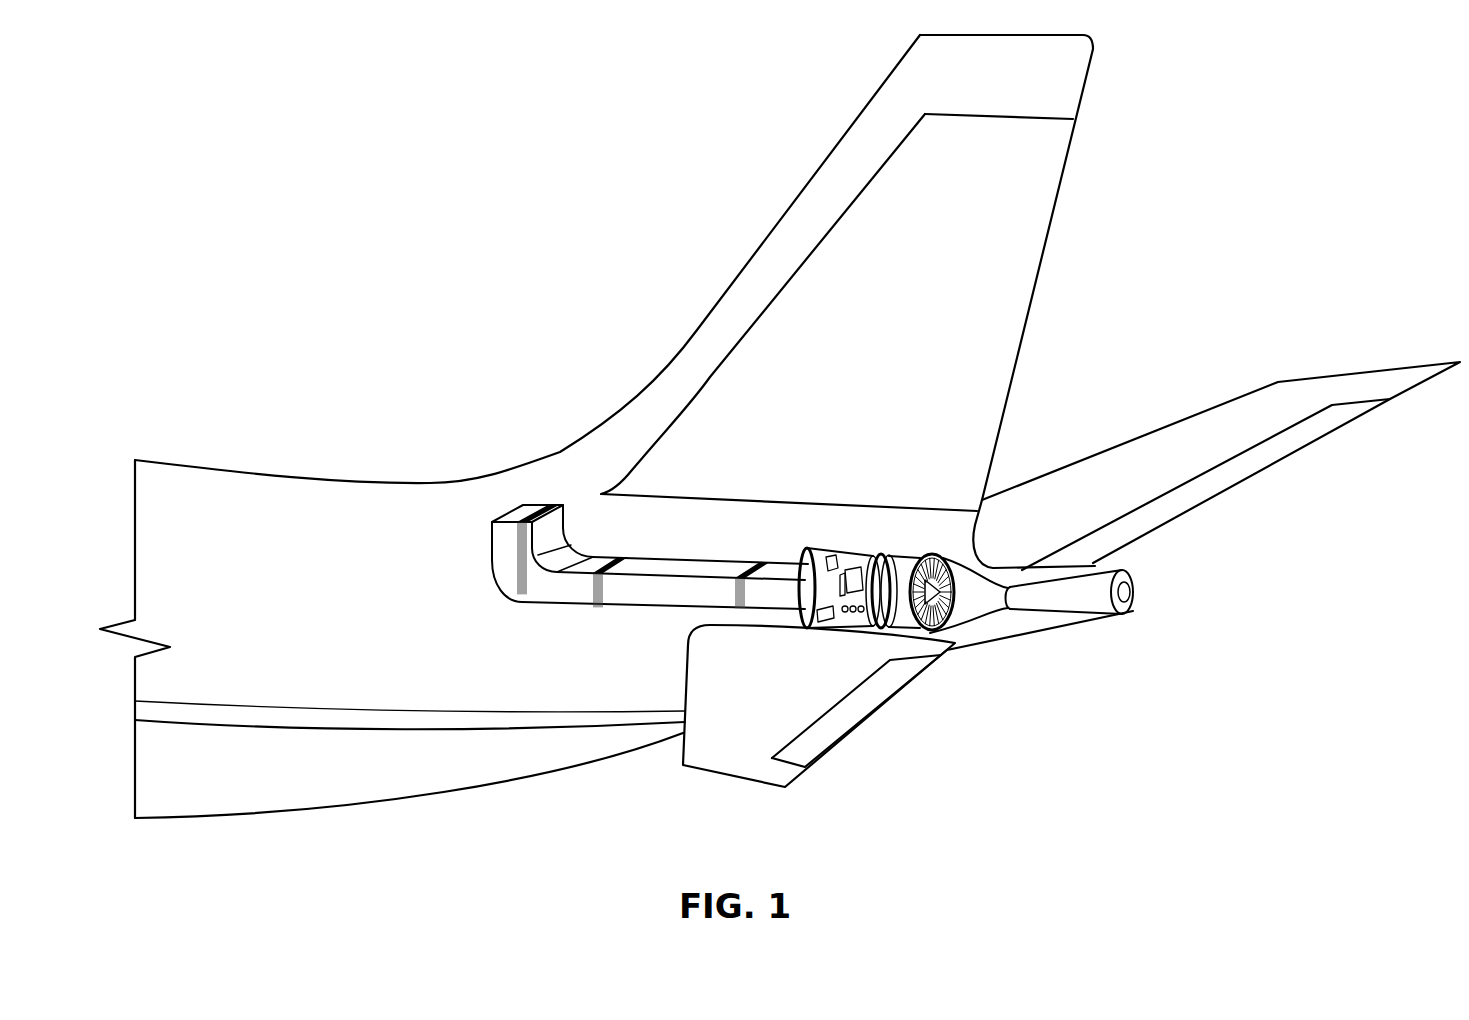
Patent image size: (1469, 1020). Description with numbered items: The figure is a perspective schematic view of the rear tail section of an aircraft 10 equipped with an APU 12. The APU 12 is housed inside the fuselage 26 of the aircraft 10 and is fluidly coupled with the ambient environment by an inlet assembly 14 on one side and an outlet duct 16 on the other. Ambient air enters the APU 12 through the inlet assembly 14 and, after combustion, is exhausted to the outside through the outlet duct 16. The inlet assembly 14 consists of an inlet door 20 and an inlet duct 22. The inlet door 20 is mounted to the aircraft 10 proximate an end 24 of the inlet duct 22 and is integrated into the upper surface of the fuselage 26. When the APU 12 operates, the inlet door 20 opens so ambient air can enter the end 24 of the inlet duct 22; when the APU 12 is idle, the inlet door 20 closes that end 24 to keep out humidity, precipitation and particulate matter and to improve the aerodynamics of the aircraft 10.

The aircraft 10 is at (297, 471).
The APU 12 is at (877, 552).
The inlet assembly 14 is at (623, 570).
The outlet duct 16 is at (1063, 583).
The inlet door 20 is at (520, 517).
The inlet duct 22 is at (512, 586).
The end of the inlet duct 24 is at (508, 533).
The fuselage 26 is at (343, 474).